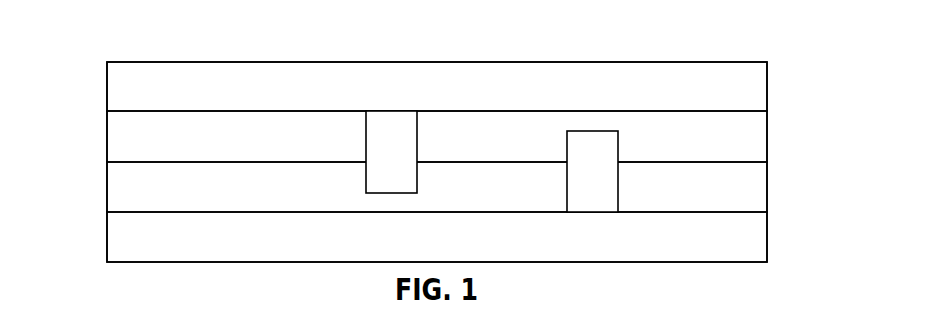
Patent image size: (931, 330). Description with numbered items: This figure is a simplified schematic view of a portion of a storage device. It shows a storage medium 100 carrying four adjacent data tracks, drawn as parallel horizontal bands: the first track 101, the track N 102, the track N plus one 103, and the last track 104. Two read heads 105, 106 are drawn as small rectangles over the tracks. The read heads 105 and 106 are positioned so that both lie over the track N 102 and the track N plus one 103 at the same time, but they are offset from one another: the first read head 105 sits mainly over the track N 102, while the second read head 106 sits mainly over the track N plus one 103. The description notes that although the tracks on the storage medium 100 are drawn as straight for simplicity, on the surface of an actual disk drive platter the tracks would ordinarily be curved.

The storage medium 100 is at (90, 62).
The data track N-1 101 is at (783, 62).
The data track N 102 is at (783, 113).
The data track N+1 103 is at (783, 164).
The data track N+2 104 is at (783, 214).
The read head 105 is at (388, 123).
The read head 106 is at (590, 202).